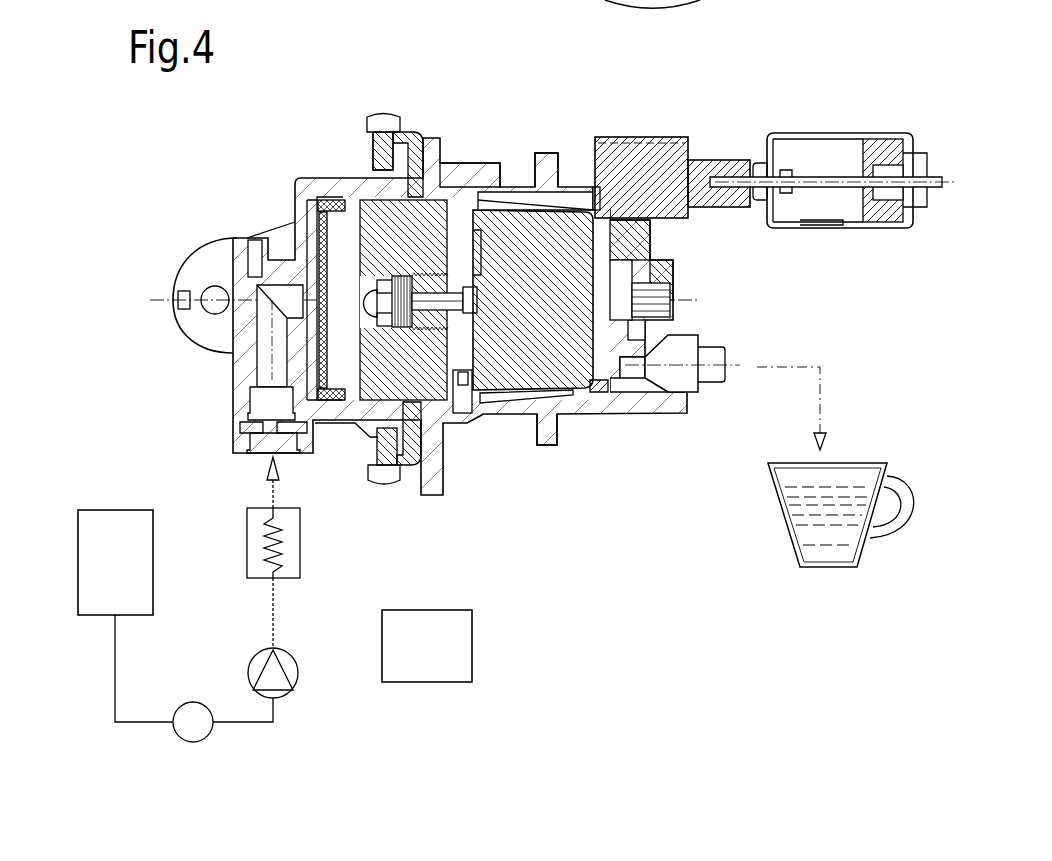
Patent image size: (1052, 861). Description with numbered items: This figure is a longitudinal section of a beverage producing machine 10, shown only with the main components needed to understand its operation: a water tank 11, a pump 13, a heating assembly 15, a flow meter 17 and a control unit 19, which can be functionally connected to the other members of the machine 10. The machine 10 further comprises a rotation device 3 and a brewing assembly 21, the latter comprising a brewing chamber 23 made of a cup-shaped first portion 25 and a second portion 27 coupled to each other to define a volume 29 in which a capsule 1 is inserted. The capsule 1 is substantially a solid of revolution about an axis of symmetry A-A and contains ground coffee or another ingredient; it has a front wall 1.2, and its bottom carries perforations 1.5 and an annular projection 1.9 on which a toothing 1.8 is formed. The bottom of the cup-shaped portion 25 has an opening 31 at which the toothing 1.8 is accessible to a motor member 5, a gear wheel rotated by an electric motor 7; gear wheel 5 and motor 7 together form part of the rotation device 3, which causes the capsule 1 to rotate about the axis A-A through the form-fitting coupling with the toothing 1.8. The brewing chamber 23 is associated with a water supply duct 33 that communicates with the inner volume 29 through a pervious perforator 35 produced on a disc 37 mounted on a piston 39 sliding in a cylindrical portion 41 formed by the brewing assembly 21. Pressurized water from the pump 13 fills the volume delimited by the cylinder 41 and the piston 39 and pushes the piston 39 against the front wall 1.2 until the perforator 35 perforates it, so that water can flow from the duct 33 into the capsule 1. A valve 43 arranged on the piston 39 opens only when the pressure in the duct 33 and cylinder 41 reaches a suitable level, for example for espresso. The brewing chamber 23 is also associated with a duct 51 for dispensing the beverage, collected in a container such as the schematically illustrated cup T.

The machine 10 is at (795, 100).
The brewing assembly 21 is at (485, 133).
The second portion 27 is at (452, 158).
The first portion 25 is at (545, 153).
The brewing chamber 23 is at (517, 432).
The volume 29 is at (508, 200).
The opening 31 is at (600, 190).
The cylindrical portion 41 is at (307, 250).
The piston 39 is at (372, 362).
The valve 43 is at (362, 302).
The perforator 35 is at (488, 302).
The capsule 1 is at (510, 400).
The front wall 1.2 is at (487, 265).
The perforations 1.5 is at (618, 275).
The toothing 1.8 is at (598, 395).
The annular projection 1.9 is at (630, 378).
The duct 51 is at (700, 372).
The disc 37 is at (456, 405).
The water supply duct 33 is at (262, 367).
The rotation device 3 is at (780, 262).
The motor member 5 is at (630, 150).
The electric motor 7 is at (848, 133).
The cup T is at (872, 477).
The axis of symmetry A is at (421, 301).
The water tank 11 is at (90, 545).
The heating assembly 15 is at (258, 545).
The pump 13 is at (262, 660).
The flow meter 17 is at (193, 733).
The control unit 19 is at (426, 678).